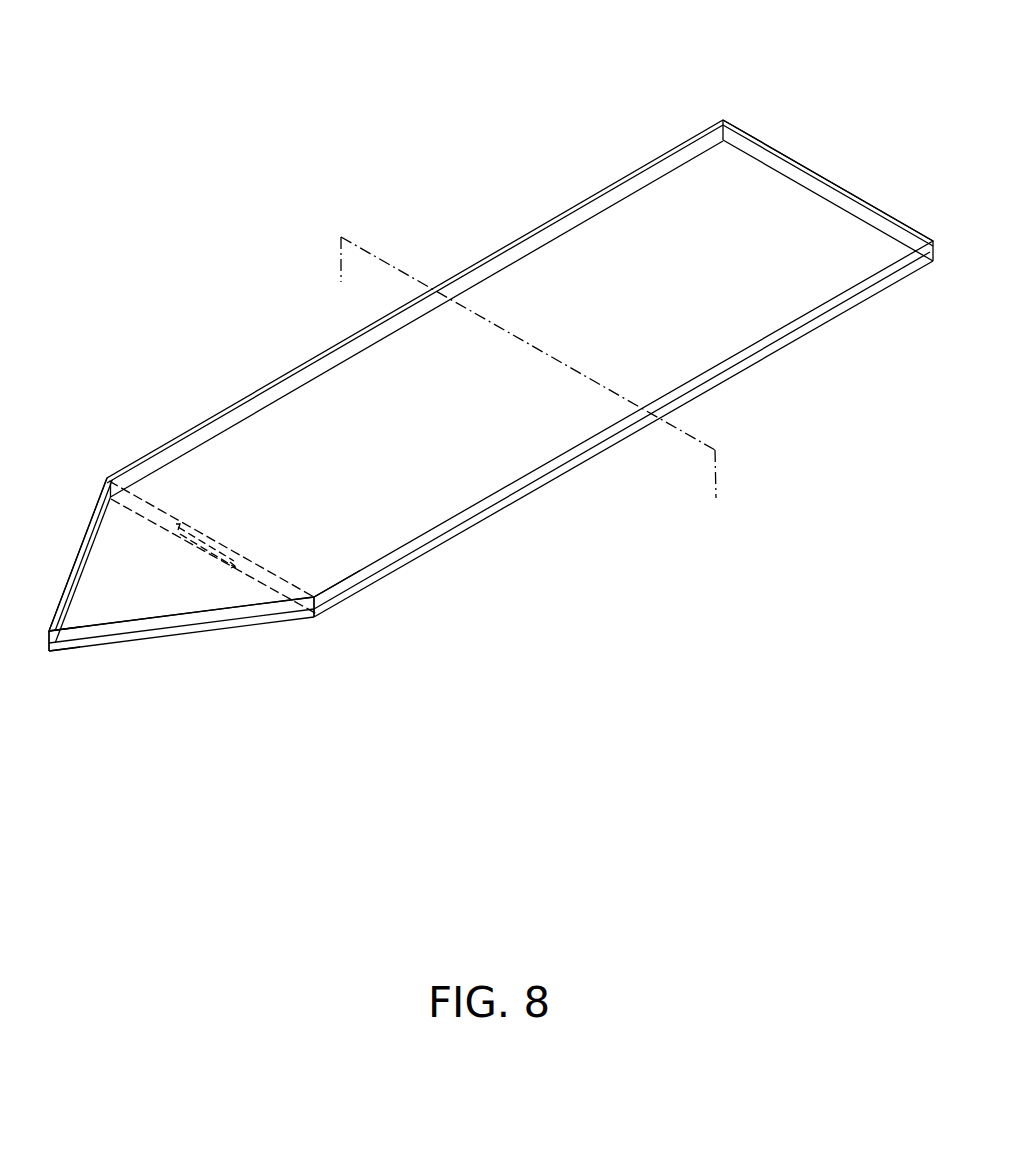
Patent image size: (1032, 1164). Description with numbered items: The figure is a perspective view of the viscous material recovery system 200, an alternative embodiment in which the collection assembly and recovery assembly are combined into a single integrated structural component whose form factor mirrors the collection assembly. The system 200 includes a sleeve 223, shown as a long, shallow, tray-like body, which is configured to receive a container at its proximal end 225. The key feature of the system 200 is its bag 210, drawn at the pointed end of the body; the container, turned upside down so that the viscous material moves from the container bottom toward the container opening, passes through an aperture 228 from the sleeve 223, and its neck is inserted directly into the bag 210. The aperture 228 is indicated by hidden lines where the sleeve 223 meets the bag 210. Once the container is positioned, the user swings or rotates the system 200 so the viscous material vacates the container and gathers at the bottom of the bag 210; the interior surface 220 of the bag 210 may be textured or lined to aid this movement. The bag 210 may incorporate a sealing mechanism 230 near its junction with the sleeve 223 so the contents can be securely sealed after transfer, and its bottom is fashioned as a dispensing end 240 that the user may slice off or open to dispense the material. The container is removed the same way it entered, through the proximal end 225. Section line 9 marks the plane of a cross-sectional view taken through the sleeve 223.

The system 200 is at (475, 365).
The bag 210 is at (226, 650).
The interior surface of bag 220 is at (90, 558).
The sleeve 223 is at (706, 259).
The proximal end 225 is at (853, 192).
The aperture 228 is at (188, 527).
The sealing mechanism 230 is at (273, 571).
The dispensing end 240 is at (50, 649).
The section line 9- 9 is at (528, 386).